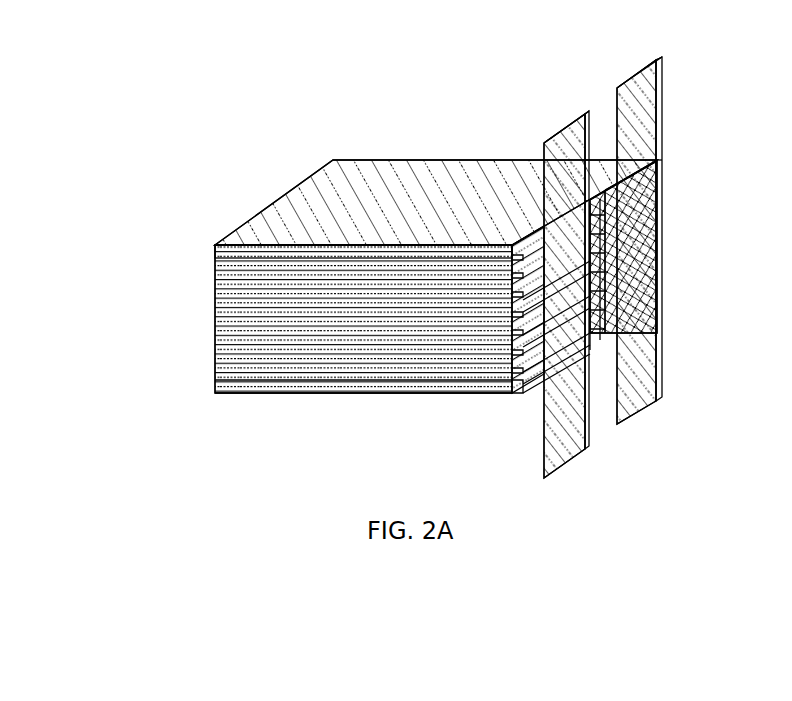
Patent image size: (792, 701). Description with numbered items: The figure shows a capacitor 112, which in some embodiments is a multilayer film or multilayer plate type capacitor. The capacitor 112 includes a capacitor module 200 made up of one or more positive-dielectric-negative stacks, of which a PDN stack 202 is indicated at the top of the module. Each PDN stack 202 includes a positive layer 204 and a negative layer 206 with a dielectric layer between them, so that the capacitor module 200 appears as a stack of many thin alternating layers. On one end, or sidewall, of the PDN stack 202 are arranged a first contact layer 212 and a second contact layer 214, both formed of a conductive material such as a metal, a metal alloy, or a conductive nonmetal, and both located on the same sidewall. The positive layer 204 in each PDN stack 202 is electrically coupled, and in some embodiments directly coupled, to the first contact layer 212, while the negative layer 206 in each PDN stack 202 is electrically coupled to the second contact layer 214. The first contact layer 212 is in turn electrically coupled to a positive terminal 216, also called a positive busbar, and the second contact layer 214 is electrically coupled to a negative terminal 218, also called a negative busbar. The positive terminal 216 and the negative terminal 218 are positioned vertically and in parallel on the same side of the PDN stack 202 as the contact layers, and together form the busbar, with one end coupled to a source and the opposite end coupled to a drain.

The capacitor 112 is at (238, 88).
The capacitor module 200 is at (135, 244).
The positive-dielectric-negative (PDN) stack 202 is at (203, 246).
The positive layer 204 is at (355, 177).
The negative layer 206 is at (491, 393).
The first contact layer 212 is at (652, 192).
The second contact layer 214 is at (583, 355).
The positive terminal 216 is at (635, 90).
The negative terminal 218 is at (565, 147).